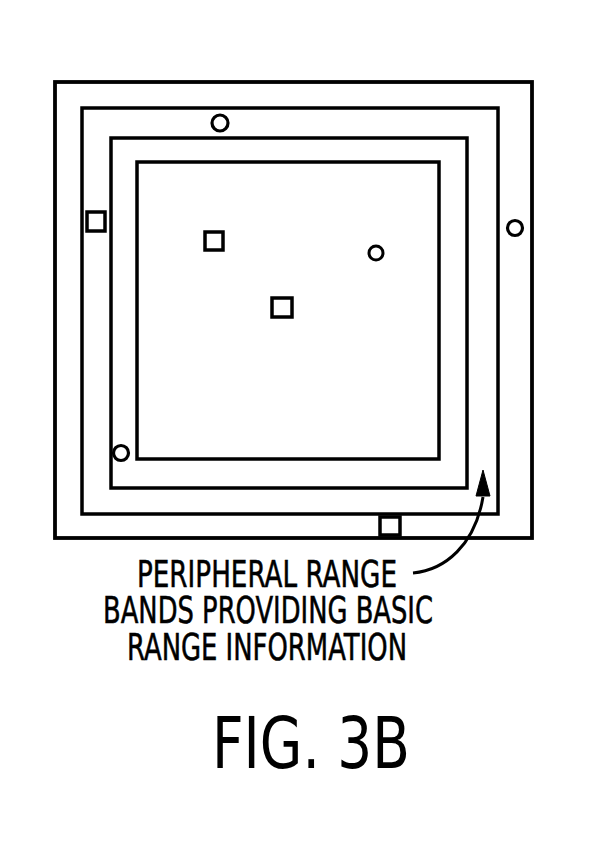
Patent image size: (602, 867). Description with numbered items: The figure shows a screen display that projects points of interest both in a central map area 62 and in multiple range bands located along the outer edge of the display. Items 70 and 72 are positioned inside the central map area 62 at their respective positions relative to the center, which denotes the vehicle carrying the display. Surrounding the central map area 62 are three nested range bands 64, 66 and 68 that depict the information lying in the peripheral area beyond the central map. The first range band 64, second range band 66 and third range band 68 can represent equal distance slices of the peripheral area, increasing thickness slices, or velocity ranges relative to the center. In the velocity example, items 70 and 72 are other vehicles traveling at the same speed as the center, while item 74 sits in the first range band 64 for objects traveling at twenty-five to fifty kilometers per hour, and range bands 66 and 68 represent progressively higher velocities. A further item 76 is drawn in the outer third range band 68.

The central map area 62 is at (307, 435).
The first range band 64 is at (262, 148).
The second range band 66 is at (343, 122).
The third range band 68 is at (442, 93).
The item 70 is at (215, 250).
The item 72 is at (374, 246).
The item 74 is at (110, 463).
The circular target symbol in outer peripheral band 76 is at (532, 222).